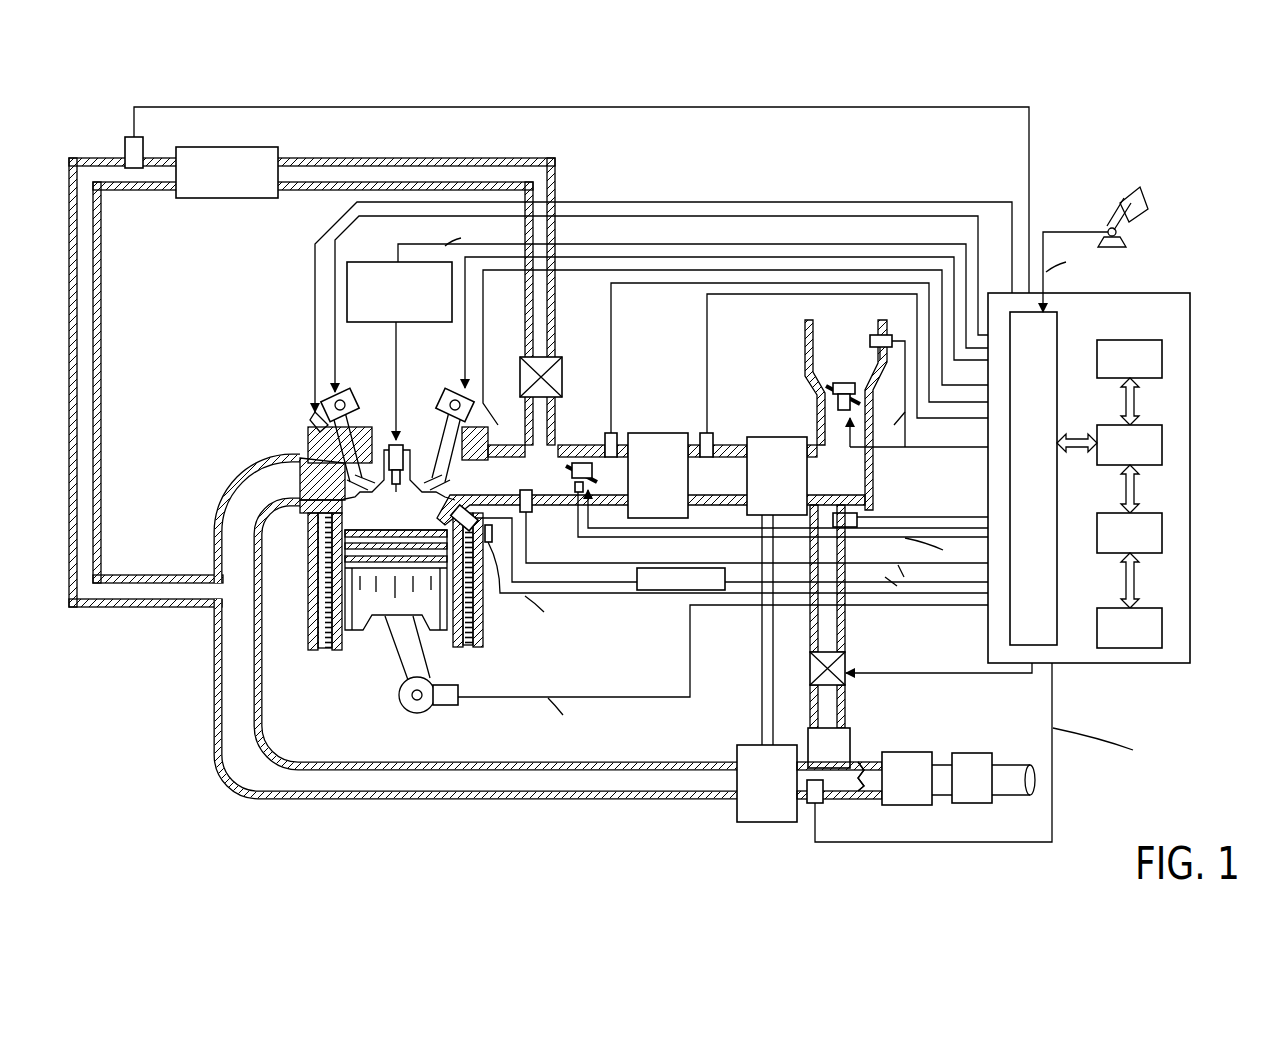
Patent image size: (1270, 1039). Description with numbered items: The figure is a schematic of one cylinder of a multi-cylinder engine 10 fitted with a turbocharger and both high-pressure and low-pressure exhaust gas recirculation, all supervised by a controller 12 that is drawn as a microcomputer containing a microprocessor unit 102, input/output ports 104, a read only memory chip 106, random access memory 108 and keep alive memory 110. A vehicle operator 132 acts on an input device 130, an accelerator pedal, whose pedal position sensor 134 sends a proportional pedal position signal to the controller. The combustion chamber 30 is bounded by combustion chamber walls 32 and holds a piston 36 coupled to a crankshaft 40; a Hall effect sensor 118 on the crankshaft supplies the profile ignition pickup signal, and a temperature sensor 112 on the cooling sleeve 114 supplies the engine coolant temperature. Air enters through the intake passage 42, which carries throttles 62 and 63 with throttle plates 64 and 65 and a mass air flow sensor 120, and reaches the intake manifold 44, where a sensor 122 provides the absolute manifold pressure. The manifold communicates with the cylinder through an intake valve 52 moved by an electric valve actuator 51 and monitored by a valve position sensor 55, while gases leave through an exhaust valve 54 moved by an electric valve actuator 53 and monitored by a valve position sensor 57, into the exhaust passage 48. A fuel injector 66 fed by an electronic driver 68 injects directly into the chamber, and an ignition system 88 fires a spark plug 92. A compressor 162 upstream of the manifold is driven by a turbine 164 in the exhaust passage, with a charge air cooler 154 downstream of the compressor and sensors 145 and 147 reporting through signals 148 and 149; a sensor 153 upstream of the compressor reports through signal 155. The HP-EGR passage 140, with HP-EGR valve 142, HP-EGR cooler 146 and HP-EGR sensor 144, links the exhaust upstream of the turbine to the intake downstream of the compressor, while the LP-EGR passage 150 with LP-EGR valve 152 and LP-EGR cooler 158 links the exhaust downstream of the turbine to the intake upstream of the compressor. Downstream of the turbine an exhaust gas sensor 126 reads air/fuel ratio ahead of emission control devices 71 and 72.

The engine 10 is at (246, 382).
The controller 12 is at (1190, 294).
The combustion chamber 30 is at (322, 604).
The combustion chamber walls 32 is at (337, 642).
The piston 36 is at (382, 605).
The crankshaft 40 is at (406, 708).
The intake passage 42 is at (846, 415).
The intake manifold 44 is at (651, 485).
The exhaust passage 48 is at (477, 626).
The electric valve actuator 51 is at (453, 394).
The intake valve 52 is at (440, 500).
The electric valve actuator 53 is at (342, 394).
The exhaust valve 54 is at (312, 448).
The valve position sensor 55 is at (470, 410).
The valve position sensor 57 is at (327, 411).
The throttle 62 is at (580, 462).
The throttle 63 is at (827, 388).
The throttle plate 64 is at (568, 468).
The throttle plate 65 is at (832, 397).
The fuel injector 66 is at (448, 519).
The electronic driver 68 is at (732, 574).
The emission control device 71 is at (864, 778).
The emission control device 72 is at (983, 778).
The ignition system 88 is at (353, 262).
The spark plug 92 is at (397, 440).
The microprocessor unit 102 is at (1163, 442).
The input/output ports 104 is at (1058, 320).
The read only memory chip 106 is at (1163, 356).
The random access memory 108 is at (1163, 532).
The keep alive memory 110 is at (1163, 626).
The temperature sensor 112 is at (490, 546).
The cooling sleeve 114 is at (478, 620).
The Hall effect sensor 118 is at (450, 706).
The mass air flow sensor 120 is at (872, 335).
The manifold pressure sensor 122 is at (521, 495).
The exhaust gas sensor 126 is at (820, 804).
The input device 130 is at (1092, 208).
The vehicle operator 132 is at (1137, 200).
The pedal position sensor 134 is at (1125, 235).
The HP-EGR passage 140 is at (470, 159).
The HP-EGR valve 142 is at (562, 376).
The HP-EGR sensor 144 is at (128, 140).
The sensor 145 is at (707, 434).
The HP-EGR cooler 146 is at (227, 172).
The sensor 147 is at (612, 434).
The signal 148 is at (707, 360).
The signal 149 is at (611, 360).
The LP-EGR passage 150 is at (846, 618).
The LP-EGR valve 152 is at (810, 670).
The sensor 153 is at (840, 513).
The charge air cooler 154 is at (658, 475).
The signal 155 is at (895, 518).
The LP-EGR cooler 158 is at (830, 748).
The compressor 162 is at (777, 591).
The turbine 164 is at (767, 783).